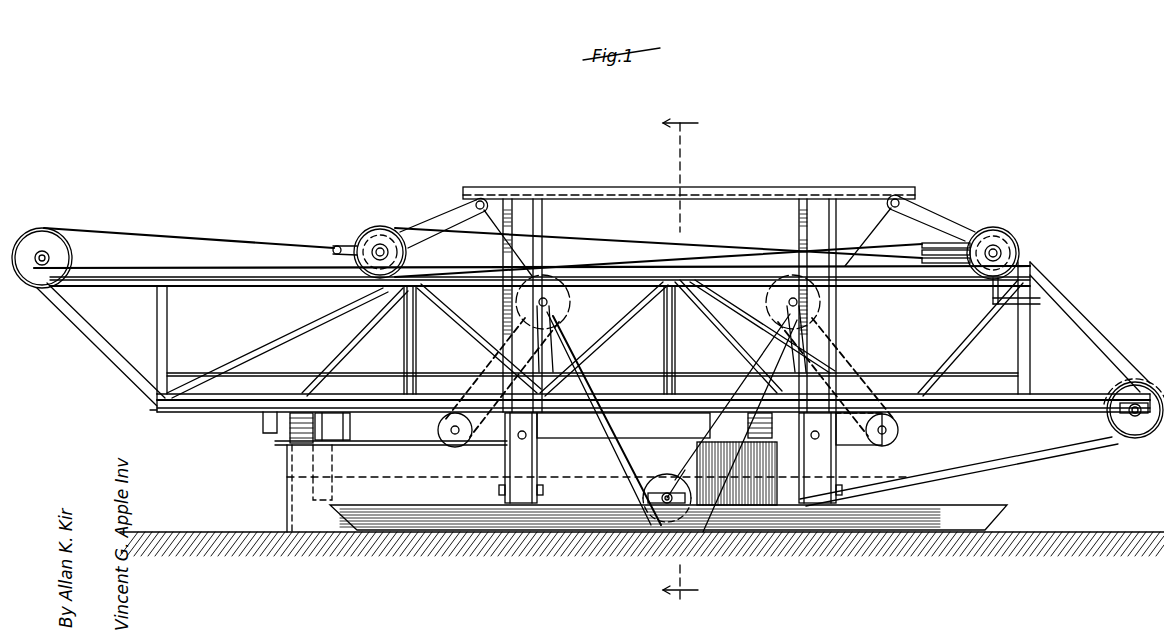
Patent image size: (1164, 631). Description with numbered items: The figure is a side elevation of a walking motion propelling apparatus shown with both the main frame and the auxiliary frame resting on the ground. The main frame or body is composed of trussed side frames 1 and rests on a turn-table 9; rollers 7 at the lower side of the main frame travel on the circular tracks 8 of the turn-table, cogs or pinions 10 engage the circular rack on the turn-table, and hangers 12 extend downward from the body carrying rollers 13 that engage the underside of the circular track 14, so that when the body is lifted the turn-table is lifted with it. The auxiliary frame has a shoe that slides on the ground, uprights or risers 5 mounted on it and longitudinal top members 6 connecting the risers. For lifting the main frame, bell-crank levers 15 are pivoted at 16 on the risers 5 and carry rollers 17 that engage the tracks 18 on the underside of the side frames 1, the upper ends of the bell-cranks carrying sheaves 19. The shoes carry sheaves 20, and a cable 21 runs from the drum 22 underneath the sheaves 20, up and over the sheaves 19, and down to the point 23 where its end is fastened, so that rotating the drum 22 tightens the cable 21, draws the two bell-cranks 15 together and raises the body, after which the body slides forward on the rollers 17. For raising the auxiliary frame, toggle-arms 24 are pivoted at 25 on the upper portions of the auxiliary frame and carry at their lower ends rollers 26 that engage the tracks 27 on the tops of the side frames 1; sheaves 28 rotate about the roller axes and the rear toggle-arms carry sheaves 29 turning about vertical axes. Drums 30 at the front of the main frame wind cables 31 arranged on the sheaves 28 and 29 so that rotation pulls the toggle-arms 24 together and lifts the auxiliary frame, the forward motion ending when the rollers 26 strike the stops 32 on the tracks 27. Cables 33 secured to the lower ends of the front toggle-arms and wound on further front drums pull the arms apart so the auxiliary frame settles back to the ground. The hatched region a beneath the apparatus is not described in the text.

The side frames 1 is at (977, 400).
The uprights or risers 5 is at (505, 462).
The longitudinal top members 6 is at (797, 235).
The rollers 7 is at (318, 414).
The circular tracks 8 is at (268, 416).
The turn-table 9 is at (298, 464).
The cogs or pinions 10 is at (305, 413).
The hangers 12 is at (336, 462).
The rollers 13 is at (310, 494).
The circular track 14 is at (293, 477).
The bell-crank levers 15 is at (538, 428).
The pivot 16 is at (527, 440).
The rollers 17 is at (447, 443).
The tracks 18 is at (163, 413).
The sheaves 19 is at (562, 318).
The sheaves 20 is at (690, 512).
The cable 21 is at (1056, 448).
The drum 22 is at (1137, 430).
The point 23 is at (665, 478).
The toggle-arms 24 is at (440, 226).
The pivot 25 is at (483, 201).
The rollers 26 is at (362, 240).
The tracks 27 is at (238, 266).
The sheaves 28 is at (333, 245).
The sheaves 29 is at (955, 244).
The drums 30 is at (60, 246).
The cables 31 is at (226, 287).
The stops 32 is at (1032, 268).
The cables 33 is at (213, 237).
The hull a is at (900, 522).